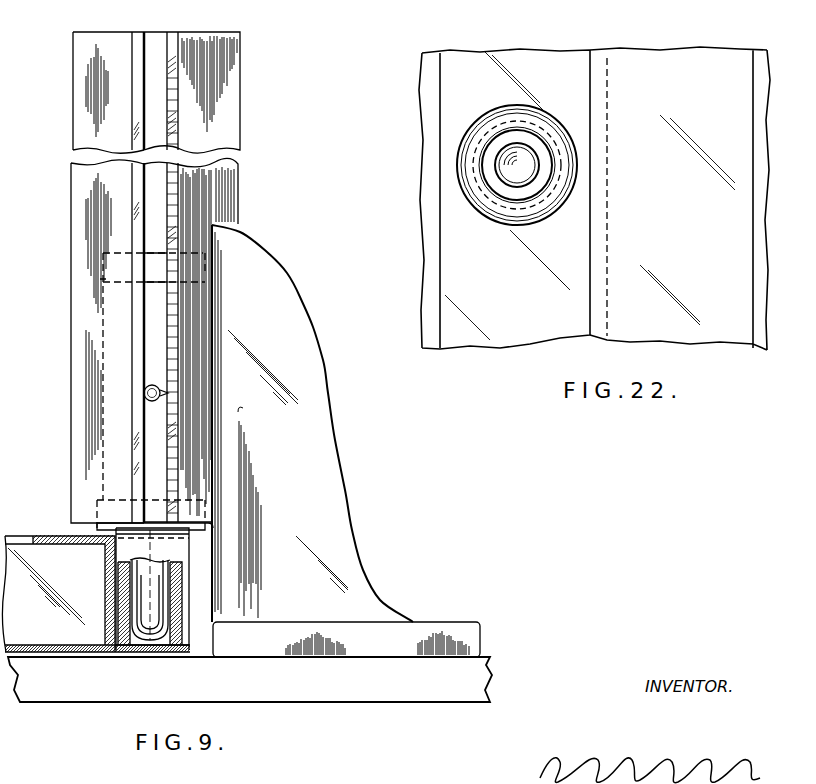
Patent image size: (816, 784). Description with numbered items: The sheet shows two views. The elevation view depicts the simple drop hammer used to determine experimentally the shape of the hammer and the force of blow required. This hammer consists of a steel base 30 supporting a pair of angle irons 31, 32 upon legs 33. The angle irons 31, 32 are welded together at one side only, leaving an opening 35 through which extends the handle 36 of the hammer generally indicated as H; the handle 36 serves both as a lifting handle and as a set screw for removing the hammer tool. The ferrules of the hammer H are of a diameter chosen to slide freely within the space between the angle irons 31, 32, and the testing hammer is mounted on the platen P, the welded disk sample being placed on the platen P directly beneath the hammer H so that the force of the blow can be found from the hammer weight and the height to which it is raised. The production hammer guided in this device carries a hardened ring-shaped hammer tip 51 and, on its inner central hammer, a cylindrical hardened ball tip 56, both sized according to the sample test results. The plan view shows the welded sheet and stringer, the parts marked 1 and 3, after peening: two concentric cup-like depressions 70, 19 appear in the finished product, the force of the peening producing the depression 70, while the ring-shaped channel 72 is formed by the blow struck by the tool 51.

In FIG. 9, the angle iron 31 is at (77, 75).
In FIG. 9, the angle iron 32 is at (232, 100).
In FIG. 9, the opening 35 is at (162, 38).
In FIG. 9, the hammer H is at (150, 321).
In FIG. 9, the handle 36 is at (143, 393).
In FIG. 9, the legs 33 is at (347, 490).
In FIG. 9, the steel base 30 is at (445, 622).
In FIG. 9, the platen P is at (332, 700).
In FIG. 9, the panel 3 is at (108, 578).
In FIG. 22, the panel 3 is at (589, 72).
In FIG. 9, the hardened hammer tip 51 is at (117, 627).
In FIG. 9, the cylindrical hardened ball tip 56 is at (138, 645).
In FIG. 22, the panel 1 is at (424, 103).
In FIG. 22, the ring-shaped channel 72 is at (552, 122).
In FIG. 22, the cup-like depression 19 is at (492, 155).
In FIG. 22, the cup-like depression 70 is at (512, 178).